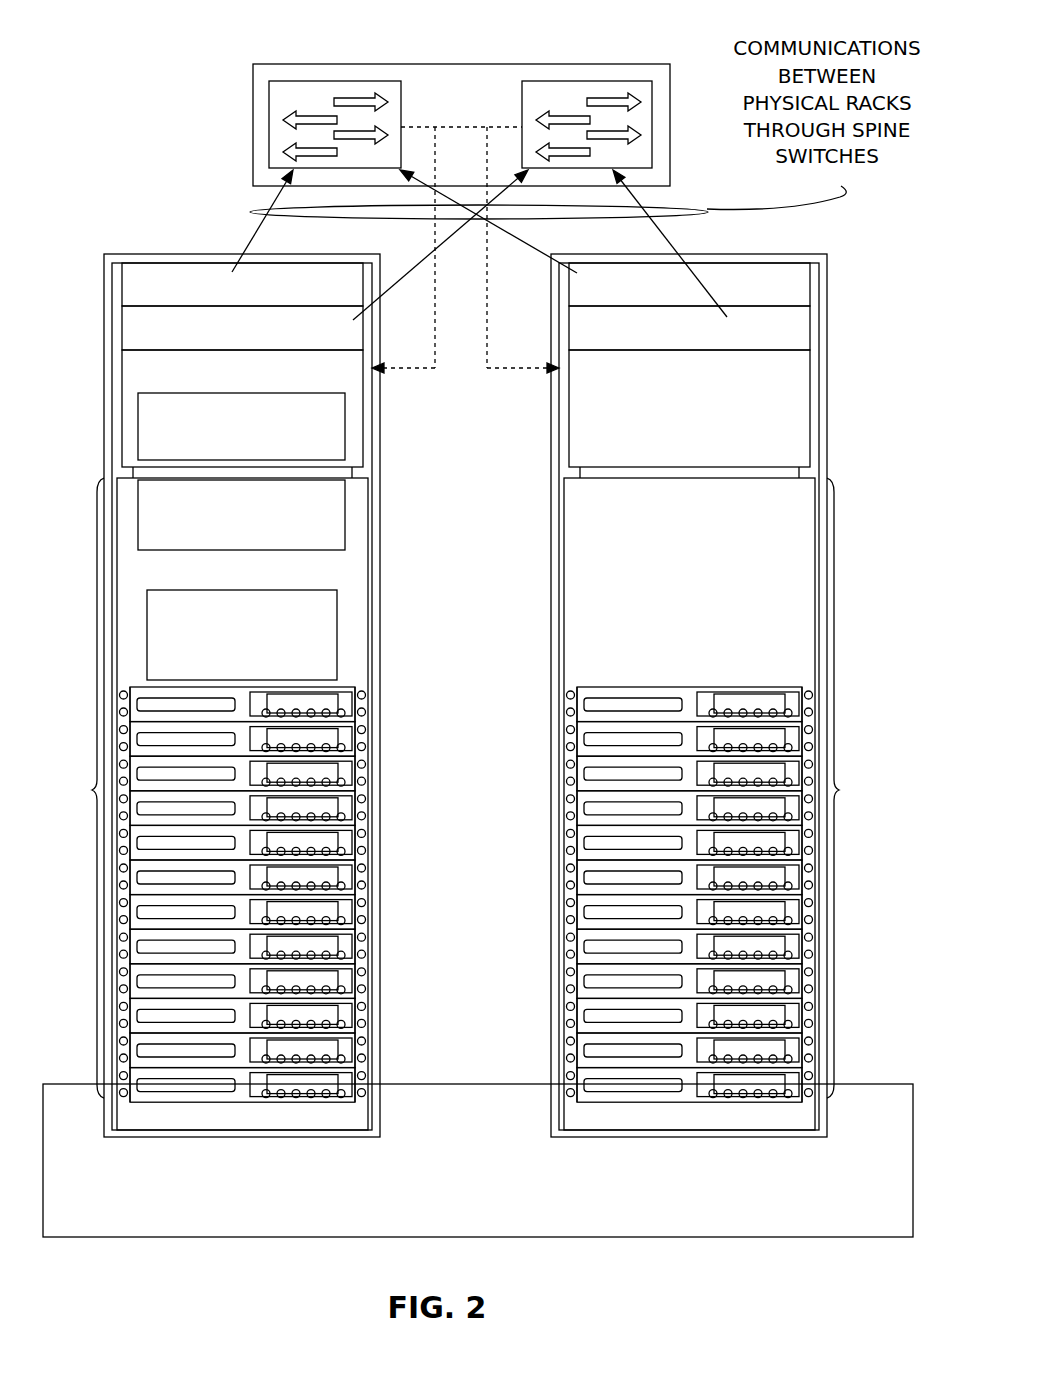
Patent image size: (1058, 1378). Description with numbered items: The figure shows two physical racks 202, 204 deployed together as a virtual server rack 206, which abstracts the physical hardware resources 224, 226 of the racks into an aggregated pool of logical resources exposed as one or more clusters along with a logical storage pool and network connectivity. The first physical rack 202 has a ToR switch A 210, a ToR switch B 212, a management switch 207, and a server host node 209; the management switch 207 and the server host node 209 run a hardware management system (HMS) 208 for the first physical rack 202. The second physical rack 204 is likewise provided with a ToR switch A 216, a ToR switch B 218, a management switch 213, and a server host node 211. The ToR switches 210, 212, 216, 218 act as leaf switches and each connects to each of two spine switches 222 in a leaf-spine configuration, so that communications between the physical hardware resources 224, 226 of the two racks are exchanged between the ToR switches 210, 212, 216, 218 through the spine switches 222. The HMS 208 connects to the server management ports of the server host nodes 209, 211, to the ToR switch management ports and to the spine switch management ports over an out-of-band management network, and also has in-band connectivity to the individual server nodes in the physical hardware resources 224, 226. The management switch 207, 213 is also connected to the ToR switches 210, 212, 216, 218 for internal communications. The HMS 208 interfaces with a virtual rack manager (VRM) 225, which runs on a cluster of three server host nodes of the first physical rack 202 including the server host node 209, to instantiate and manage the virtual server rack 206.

The first physical rack 202 is at (199, 708).
The second physical rack 204 is at (737, 710).
The virtual server rack 206 is at (186, 1244).
The management switch 207 is at (122, 379).
The hardware management system (HMS) 208 is at (115, 472).
The server host node(0) 209 is at (125, 523).
The ToR switch A 210 is at (113, 290).
The server host node(0) 211 is at (803, 532).
The ToR switch B 212 is at (120, 326).
The management switch 213 is at (813, 375).
The ToR switch A 216 is at (827, 283).
The ToR switch B 218 is at (813, 328).
The spine switches 222 is at (253, 125).
The physical hardware resources 224 is at (93, 790).
The virtual rack manager (VRM) 225 is at (147, 653).
The physical hardware resources 226 is at (838, 790).